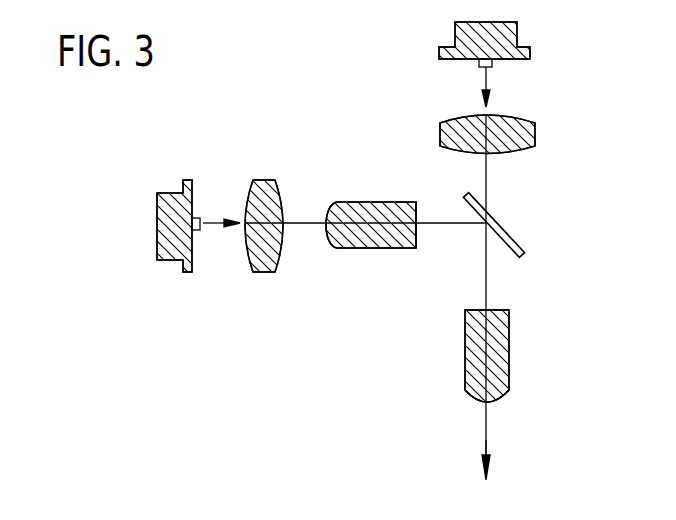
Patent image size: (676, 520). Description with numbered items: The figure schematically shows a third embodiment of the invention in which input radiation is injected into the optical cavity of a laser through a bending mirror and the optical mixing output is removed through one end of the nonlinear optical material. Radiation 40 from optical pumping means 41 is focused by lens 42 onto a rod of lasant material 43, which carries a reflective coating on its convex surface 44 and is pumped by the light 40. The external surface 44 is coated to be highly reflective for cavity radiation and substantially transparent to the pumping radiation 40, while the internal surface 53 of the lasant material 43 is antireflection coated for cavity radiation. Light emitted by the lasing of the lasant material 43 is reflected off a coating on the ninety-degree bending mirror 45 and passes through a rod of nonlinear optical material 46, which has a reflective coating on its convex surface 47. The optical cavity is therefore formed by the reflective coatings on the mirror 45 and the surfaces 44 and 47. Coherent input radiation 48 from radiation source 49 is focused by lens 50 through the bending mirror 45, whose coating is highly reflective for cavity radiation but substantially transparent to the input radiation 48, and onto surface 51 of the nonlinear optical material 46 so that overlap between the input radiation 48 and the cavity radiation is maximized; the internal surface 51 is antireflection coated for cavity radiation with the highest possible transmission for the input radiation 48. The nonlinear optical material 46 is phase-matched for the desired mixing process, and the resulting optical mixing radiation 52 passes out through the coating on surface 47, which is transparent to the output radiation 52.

The radiation 40 is at (215, 220).
The optical pumping means 41 is at (158, 210).
The lens 42 is at (265, 180).
The rod of lasant material 43 is at (356, 202).
The convex surface 44 is at (326, 240).
The 90-degree bending mirror 45 is at (514, 238).
The rod of nonlinear optical material 46 is at (502, 338).
The convex surface 47 is at (498, 397).
The coherent input radiation 48 is at (488, 80).
The radiation source 49 is at (462, 26).
The lens 50 is at (523, 133).
The surface 51 is at (498, 309).
The optical mixing radiation 52 is at (490, 443).
The internal surface 53 is at (416, 248).